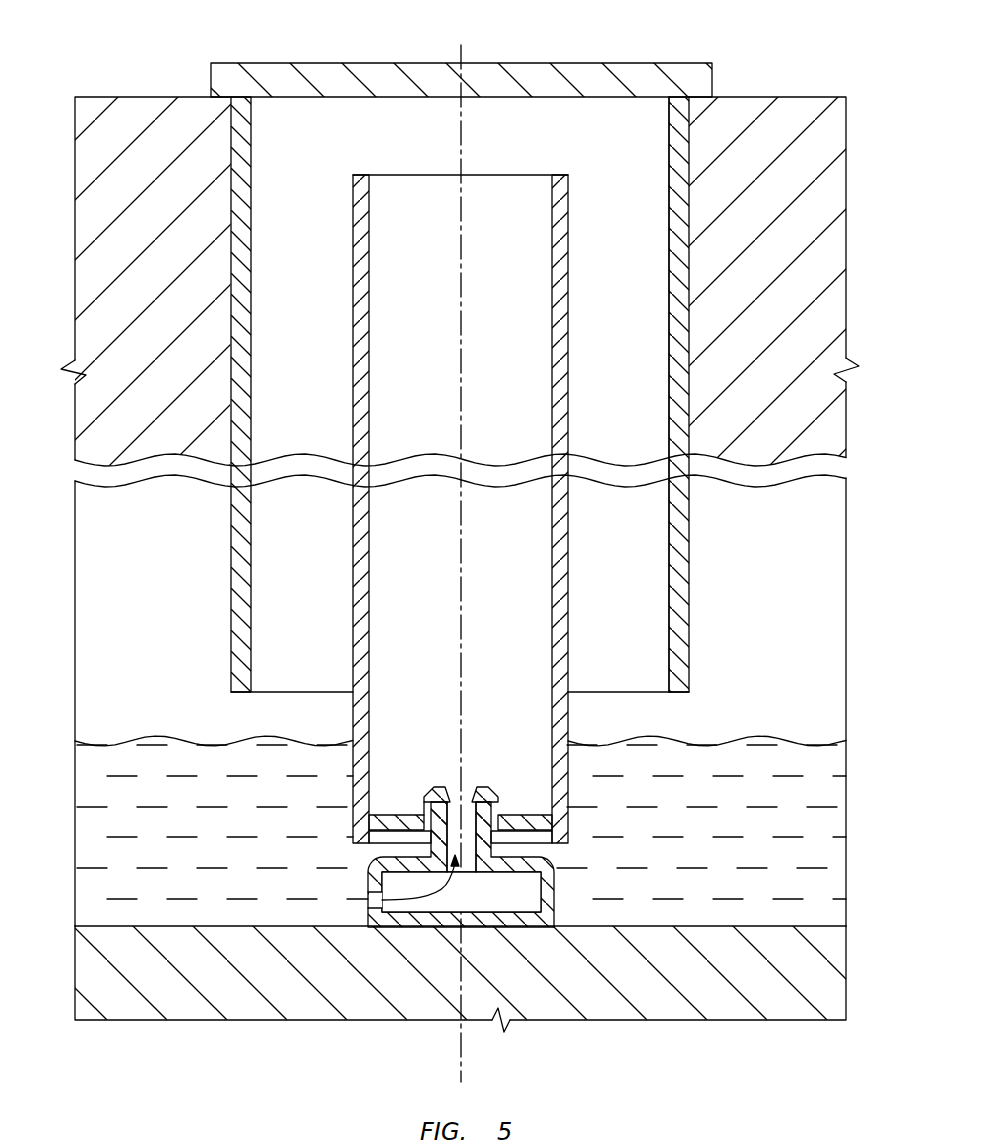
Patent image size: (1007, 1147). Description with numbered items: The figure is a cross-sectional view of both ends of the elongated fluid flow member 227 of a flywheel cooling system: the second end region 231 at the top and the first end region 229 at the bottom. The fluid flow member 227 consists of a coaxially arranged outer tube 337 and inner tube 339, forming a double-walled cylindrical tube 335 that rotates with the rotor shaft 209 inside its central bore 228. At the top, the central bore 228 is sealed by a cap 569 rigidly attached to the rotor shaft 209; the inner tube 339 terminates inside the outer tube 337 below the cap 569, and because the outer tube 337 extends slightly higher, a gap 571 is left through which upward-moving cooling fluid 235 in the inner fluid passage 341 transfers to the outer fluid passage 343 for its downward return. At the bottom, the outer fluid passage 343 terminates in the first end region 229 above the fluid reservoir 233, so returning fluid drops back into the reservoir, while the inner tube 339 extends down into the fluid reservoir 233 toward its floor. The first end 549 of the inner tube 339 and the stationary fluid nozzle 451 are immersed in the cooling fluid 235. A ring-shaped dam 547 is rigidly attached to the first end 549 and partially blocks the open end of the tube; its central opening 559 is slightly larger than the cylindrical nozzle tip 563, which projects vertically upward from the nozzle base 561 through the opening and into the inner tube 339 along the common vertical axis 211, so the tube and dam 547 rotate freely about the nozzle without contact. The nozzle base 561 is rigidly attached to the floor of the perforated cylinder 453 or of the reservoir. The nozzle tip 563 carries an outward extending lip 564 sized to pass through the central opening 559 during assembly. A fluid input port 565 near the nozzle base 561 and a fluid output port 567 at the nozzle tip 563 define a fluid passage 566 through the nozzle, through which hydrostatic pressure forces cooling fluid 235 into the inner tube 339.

The common vertical axis 211 is at (462, 52).
The cap 569 is at (357, 66).
The second end region 231 is at (163, 200).
The rotor shaft 209 is at (786, 155).
The elongated fluid flow member 227 is at (484, 367).
The central bore 228 is at (689, 267).
The double-walled cylindrical tube 335 is at (703, 128).
The outer tube 337 is at (240, 340).
The inner tube 339 is at (358, 305).
The inner fluid passage 341 is at (518, 325).
The outer fluid passage 343 is at (624, 325).
The gap 571 is at (363, 142).
The first end region 229 is at (166, 837).
The cooling fluid 235 is at (795, 862).
The fluid reservoir 233 is at (251, 989).
The perforated cylinder 453 is at (183, 972).
The fluid nozzle 451 is at (556, 890).
The nozzle base 561 is at (547, 908).
The nozzle tip 563 is at (482, 790).
The fluid output port 567 is at (455, 790).
The lip 564 is at (498, 797).
The dam 547 is at (540, 823).
The first end 549 is at (560, 842).
The central opening 559 is at (422, 803).
The fluid input port 565 is at (382, 901).
The fluid passage 566 is at (361, 892).